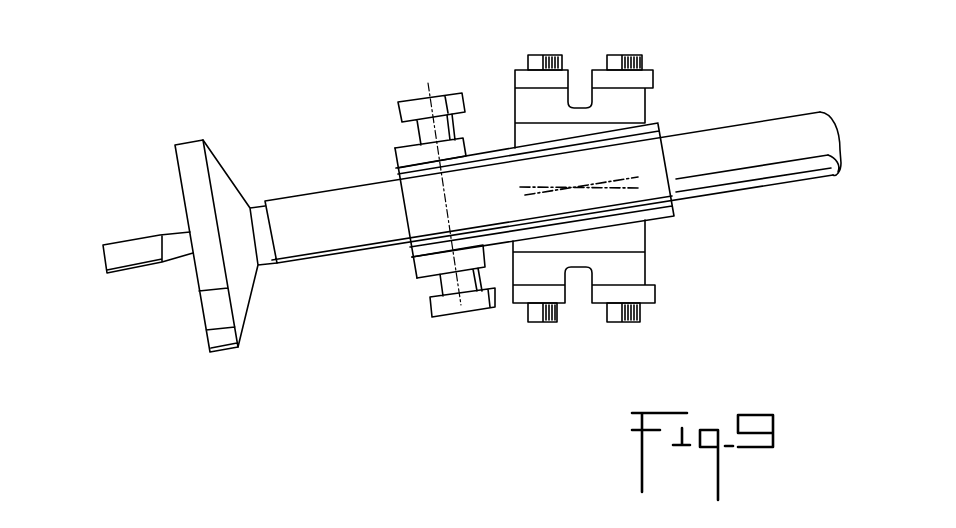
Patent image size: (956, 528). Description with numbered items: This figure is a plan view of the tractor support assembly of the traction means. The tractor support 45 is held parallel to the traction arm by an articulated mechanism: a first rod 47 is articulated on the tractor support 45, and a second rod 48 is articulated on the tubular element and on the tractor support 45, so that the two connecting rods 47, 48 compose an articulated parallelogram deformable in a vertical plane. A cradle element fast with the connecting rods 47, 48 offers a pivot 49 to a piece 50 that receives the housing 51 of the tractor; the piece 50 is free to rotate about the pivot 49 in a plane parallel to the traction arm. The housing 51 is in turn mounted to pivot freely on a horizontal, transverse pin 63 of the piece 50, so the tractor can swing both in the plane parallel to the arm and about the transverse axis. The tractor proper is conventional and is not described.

The tractor support 45 is at (633, 270).
The rod 47 is at (647, 78).
The second rod 48 is at (514, 72).
The pivot 49 is at (573, 187).
The piece 50 is at (397, 150).
The housing 51 is at (492, 150).
The pin 63 is at (465, 315).